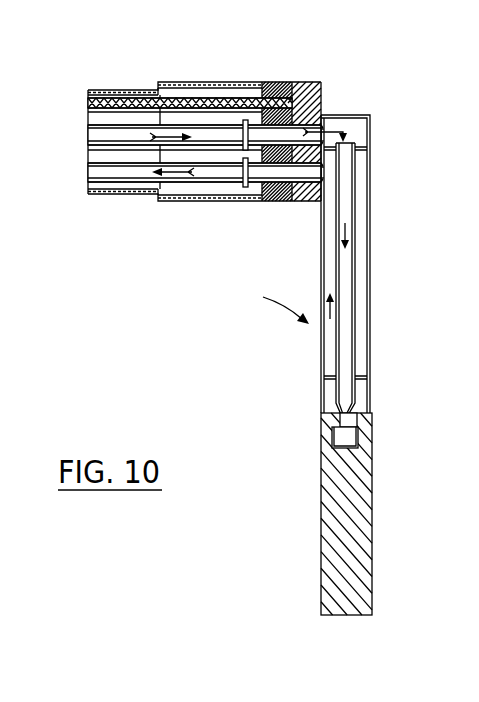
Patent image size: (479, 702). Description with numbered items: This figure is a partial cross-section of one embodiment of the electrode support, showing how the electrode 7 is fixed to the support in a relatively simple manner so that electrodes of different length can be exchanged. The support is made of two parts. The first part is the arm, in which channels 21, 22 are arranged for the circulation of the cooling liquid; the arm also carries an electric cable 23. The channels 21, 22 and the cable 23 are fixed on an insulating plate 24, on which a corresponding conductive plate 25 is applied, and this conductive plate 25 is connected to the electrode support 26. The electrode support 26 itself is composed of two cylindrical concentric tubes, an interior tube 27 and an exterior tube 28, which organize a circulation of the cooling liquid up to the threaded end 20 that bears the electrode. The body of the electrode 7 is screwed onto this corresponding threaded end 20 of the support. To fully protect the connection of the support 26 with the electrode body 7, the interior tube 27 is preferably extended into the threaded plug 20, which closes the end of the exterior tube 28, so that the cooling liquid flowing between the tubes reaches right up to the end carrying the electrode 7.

The electrode 7 is at (360, 551).
The threaded end 20 is at (348, 442).
The channel 21 is at (97, 135).
The channel 22 is at (97, 171).
The electric cable 23 is at (112, 98).
The insulating plate 24 is at (281, 202).
The conductive plate 25 is at (313, 89).
The electrode support 26 is at (270, 299).
The interior tube 27 is at (352, 283).
The exterior tube 28 is at (370, 340).